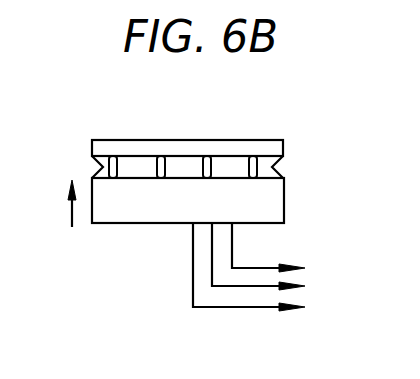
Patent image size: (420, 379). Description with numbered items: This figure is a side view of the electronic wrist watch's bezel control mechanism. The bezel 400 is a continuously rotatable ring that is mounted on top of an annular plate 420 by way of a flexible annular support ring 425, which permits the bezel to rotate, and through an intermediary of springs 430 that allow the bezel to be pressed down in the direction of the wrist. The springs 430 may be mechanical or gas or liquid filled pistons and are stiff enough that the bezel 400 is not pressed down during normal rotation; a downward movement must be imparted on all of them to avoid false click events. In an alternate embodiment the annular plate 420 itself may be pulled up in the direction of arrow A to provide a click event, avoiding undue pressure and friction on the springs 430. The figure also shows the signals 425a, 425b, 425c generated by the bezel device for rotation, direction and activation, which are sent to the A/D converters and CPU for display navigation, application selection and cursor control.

The bezel 400 is at (276, 141).
The flexible annular support ring 425 is at (275, 166).
The springs 430 is at (247, 171).
The annular plate 420 is at (284, 215).
The signal 425a is at (262, 265).
The signal 425b is at (268, 281).
The signal 425c is at (210, 307).
The arrow A is at (71, 216).